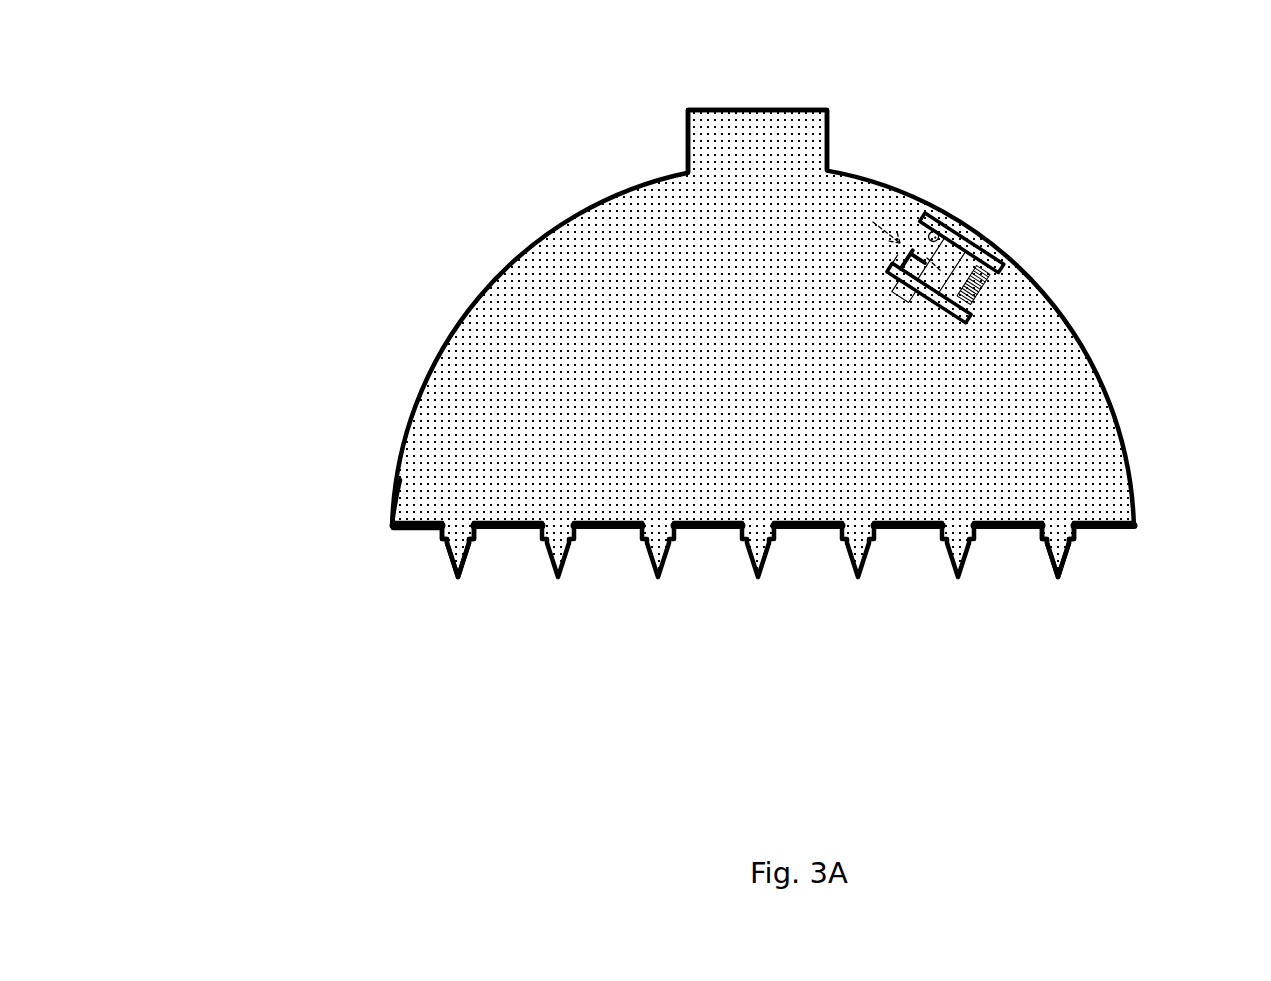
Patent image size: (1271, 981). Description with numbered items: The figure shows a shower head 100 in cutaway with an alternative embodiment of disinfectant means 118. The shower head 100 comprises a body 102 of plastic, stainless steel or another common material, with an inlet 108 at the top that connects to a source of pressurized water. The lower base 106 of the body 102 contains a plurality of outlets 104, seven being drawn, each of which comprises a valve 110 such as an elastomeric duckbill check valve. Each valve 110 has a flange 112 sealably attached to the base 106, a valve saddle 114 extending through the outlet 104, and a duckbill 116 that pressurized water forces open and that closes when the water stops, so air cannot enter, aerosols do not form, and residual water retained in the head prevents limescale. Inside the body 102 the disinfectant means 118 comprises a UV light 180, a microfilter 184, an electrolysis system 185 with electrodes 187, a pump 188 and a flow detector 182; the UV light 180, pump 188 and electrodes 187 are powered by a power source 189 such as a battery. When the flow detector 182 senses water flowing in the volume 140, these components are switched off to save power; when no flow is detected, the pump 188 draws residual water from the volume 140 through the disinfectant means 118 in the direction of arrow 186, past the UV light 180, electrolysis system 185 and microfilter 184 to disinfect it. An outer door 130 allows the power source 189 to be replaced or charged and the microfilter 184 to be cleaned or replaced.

The shower head 100 is at (440, 137).
The body 102 is at (445, 345).
The outlets 104 is at (1060, 523).
The base 106 is at (398, 530).
The inlet 108 is at (807, 133).
The valves 110 is at (1063, 548).
The flange 112 is at (437, 517).
The valve saddle 114 is at (400, 532).
The duckbill 116 is at (452, 565).
The disinfectant means 118 is at (919, 355).
The outer door 130 is at (962, 256).
The volume 140 is at (573, 318).
The ultraviolet (UV) light 180 is at (943, 228).
The flow detector 182 is at (910, 312).
The microfilter 184 is at (940, 270).
The electrolysis system 185 is at (884, 262).
The arrow 186 is at (873, 222).
The electrodes 187 is at (892, 272).
The pump 188 is at (970, 295).
The power source 189 is at (930, 213).